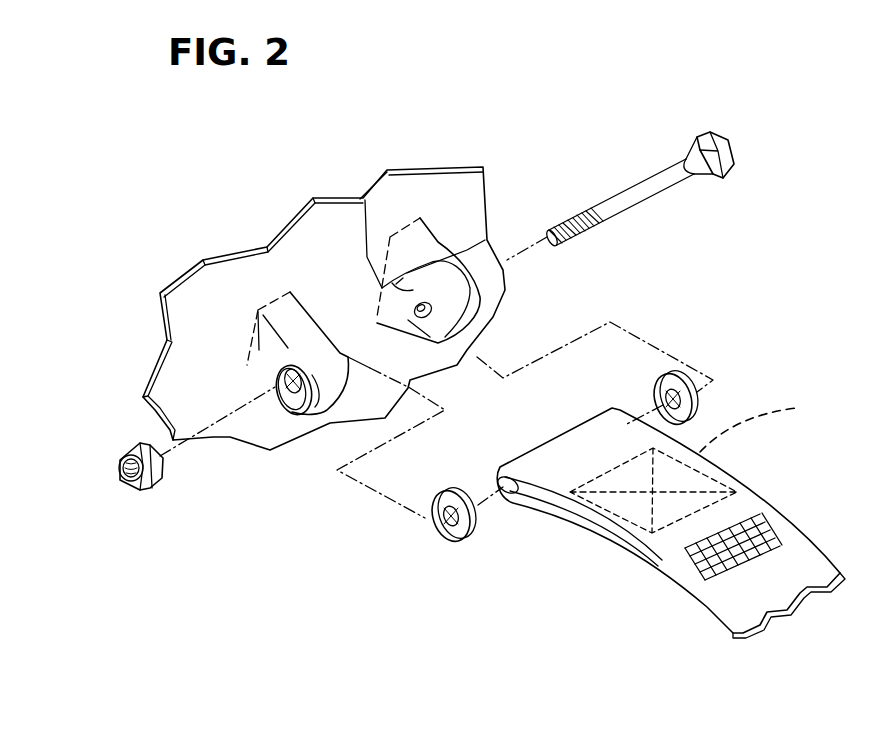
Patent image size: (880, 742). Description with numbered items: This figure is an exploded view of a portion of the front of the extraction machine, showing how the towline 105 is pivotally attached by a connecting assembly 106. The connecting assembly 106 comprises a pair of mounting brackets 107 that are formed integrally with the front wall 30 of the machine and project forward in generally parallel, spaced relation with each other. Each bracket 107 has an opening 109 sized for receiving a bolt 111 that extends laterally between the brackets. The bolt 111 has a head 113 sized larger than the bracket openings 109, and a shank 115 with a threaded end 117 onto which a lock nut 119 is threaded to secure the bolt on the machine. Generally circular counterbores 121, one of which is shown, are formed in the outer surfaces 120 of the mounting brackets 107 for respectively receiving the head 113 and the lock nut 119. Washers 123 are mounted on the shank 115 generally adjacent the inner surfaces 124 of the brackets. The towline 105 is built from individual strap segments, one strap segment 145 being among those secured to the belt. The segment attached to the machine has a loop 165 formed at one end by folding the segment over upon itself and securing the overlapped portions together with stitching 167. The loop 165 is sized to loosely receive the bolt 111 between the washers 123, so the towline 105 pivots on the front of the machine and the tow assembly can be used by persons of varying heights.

The front wall 30 is at (208, 278).
The towline 105 is at (664, 557).
The connecting assembly 106 is at (397, 222).
The mounting brackets 107 is at (486, 205).
The opening 109 is at (362, 196).
The bolt 111 is at (657, 191).
The head 113 is at (736, 170).
The shank 115 is at (668, 203).
The threaded end 117 is at (580, 247).
The lock nut 119 is at (152, 495).
The outer surfaces 120 is at (280, 377).
The counterbores 121 is at (290, 412).
The washers 123 is at (440, 543).
The inner surfaces 124 is at (440, 241).
The strap segment 145 is at (752, 490).
The loop 165 is at (530, 496).
The stitching 167 is at (768, 426).